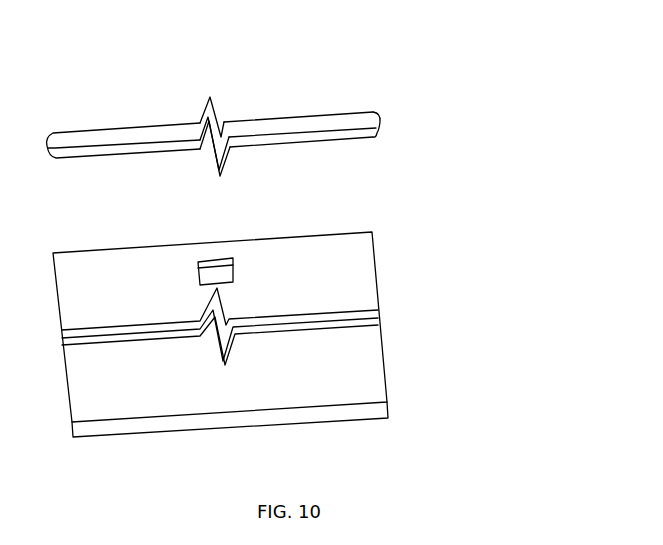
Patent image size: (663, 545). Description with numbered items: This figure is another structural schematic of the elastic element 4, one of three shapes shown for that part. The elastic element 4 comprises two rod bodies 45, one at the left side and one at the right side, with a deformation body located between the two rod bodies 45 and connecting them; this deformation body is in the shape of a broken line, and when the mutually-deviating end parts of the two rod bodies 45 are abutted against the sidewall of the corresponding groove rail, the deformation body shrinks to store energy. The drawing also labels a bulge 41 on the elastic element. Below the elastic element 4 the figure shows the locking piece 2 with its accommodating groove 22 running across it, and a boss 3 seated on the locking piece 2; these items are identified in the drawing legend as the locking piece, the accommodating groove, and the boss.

The elastic element 4 is at (259, 93).
The rod body 45 is at (333, 115).
The bulge 41 is at (380, 117).
The locking piece 2 is at (289, 315).
The accommodating groove 22 is at (378, 325).
The boss 3 is at (228, 252).